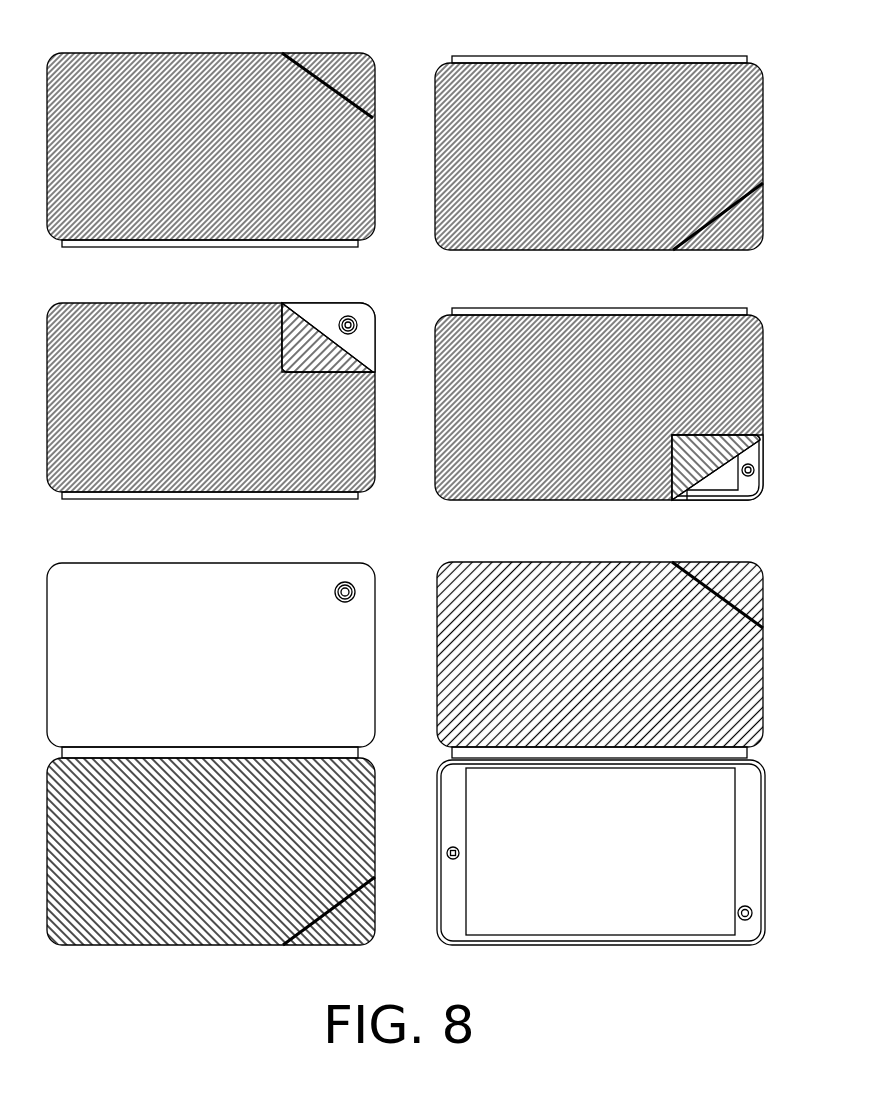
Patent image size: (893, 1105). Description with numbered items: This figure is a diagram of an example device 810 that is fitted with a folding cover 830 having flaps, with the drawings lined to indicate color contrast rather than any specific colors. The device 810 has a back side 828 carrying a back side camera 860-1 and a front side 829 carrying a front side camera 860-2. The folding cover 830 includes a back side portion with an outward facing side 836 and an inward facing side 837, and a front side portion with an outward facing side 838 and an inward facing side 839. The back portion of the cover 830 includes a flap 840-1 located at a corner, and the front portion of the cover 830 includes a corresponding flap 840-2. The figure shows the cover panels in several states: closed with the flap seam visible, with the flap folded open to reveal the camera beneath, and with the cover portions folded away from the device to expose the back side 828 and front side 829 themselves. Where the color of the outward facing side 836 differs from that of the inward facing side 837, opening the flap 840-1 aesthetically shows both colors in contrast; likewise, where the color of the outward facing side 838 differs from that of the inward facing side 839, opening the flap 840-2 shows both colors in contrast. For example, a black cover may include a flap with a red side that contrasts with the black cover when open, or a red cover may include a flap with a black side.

The device 810 is at (422, 40).
The back side 828 is at (249, 672).
The front side 829 is at (618, 866).
The folding cover 830 is at (137, 42).
The outward facing side 836 is at (216, 42).
The inward facing side 837 is at (183, 963).
The outward facing side 838 is at (601, 46).
The inward facing side 839 is at (515, 551).
The flap 840-1 is at (313, 42).
The flap 840-2 is at (723, 261).
The back side camera 860-1 is at (353, 291).
The front side camera 860-2 is at (745, 500).